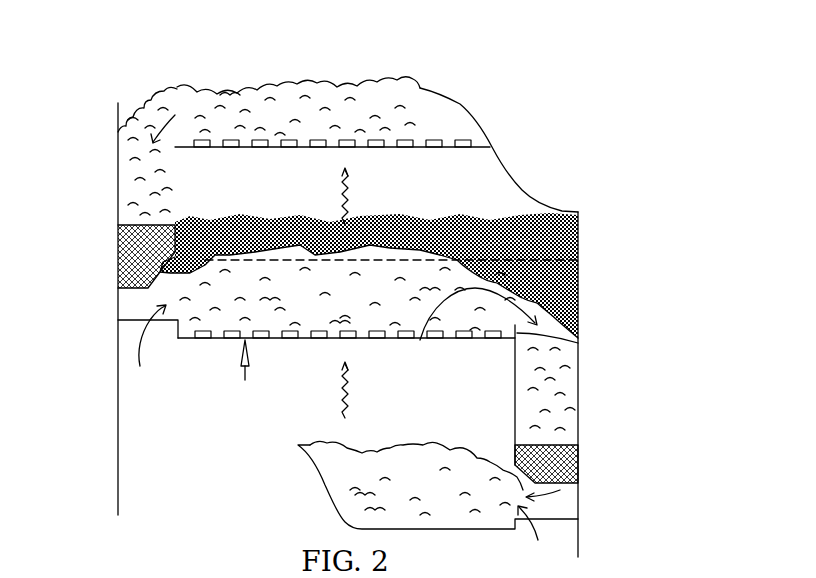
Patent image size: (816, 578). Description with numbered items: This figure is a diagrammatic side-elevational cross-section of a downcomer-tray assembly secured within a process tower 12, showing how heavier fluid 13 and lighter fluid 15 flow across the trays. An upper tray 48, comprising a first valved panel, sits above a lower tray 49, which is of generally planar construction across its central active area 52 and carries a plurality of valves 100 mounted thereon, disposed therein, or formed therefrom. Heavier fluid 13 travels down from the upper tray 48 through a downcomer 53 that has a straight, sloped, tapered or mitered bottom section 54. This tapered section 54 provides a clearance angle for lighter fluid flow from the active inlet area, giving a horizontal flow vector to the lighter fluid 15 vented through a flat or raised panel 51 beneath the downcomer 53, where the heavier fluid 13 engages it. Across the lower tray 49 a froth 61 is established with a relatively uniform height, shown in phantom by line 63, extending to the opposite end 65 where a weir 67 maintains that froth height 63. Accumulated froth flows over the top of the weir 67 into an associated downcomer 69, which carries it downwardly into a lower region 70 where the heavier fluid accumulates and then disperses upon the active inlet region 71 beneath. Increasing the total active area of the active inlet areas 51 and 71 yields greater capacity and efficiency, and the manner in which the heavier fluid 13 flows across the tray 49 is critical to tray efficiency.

The housing 12 is at (578, 243).
The heavier fluid 13 is at (143, 242).
The lighter fluid 15 is at (355, 193).
The upper tray 48 is at (418, 143).
The lower tray 49 is at (190, 340).
The flat or raised panel 51 is at (123, 320).
The central active area 52 is at (245, 368).
The downcomer 53 is at (176, 135).
The tapered bottom section 54 is at (167, 268).
The froth 61 is at (250, 88).
The froth height line 63 is at (285, 248).
The opposite end 65 is at (578, 296).
The weir 67 is at (578, 345).
The downcomer 69 is at (515, 425).
The lower region 70 is at (545, 463).
The active inlet region 71 is at (565, 515).
The valves 100 is at (290, 138).